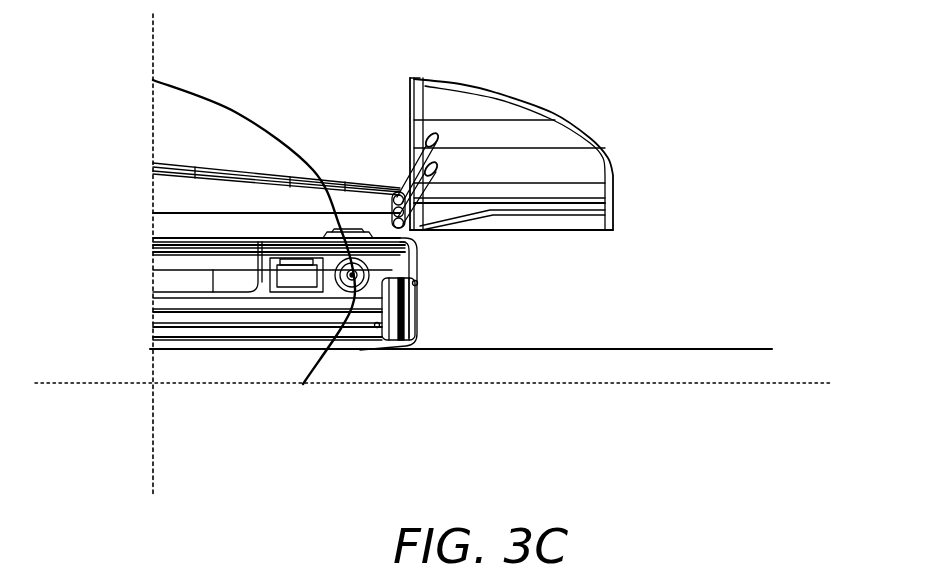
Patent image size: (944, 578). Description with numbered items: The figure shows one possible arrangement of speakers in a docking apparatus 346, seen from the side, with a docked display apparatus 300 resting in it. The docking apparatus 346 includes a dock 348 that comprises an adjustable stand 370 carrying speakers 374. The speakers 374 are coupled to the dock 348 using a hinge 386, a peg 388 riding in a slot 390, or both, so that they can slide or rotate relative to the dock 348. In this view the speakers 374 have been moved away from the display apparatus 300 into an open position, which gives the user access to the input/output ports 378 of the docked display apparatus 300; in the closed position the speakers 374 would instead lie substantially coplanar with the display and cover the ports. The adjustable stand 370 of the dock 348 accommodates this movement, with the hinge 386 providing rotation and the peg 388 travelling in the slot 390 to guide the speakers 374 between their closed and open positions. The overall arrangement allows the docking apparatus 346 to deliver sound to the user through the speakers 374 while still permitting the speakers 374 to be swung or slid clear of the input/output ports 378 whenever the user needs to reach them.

The display apparatus 300 is at (572, 242).
The docking apparatus 346 is at (785, 367).
The dock 348 is at (313, 178).
The adjustable stand 370 is at (236, 112).
The speakers 374 is at (512, 230).
The input/output (I/O) ports 378 is at (416, 302).
The hinge 386 is at (412, 172).
The peg 388 is at (391, 222).
The slot 390 is at (200, 212).